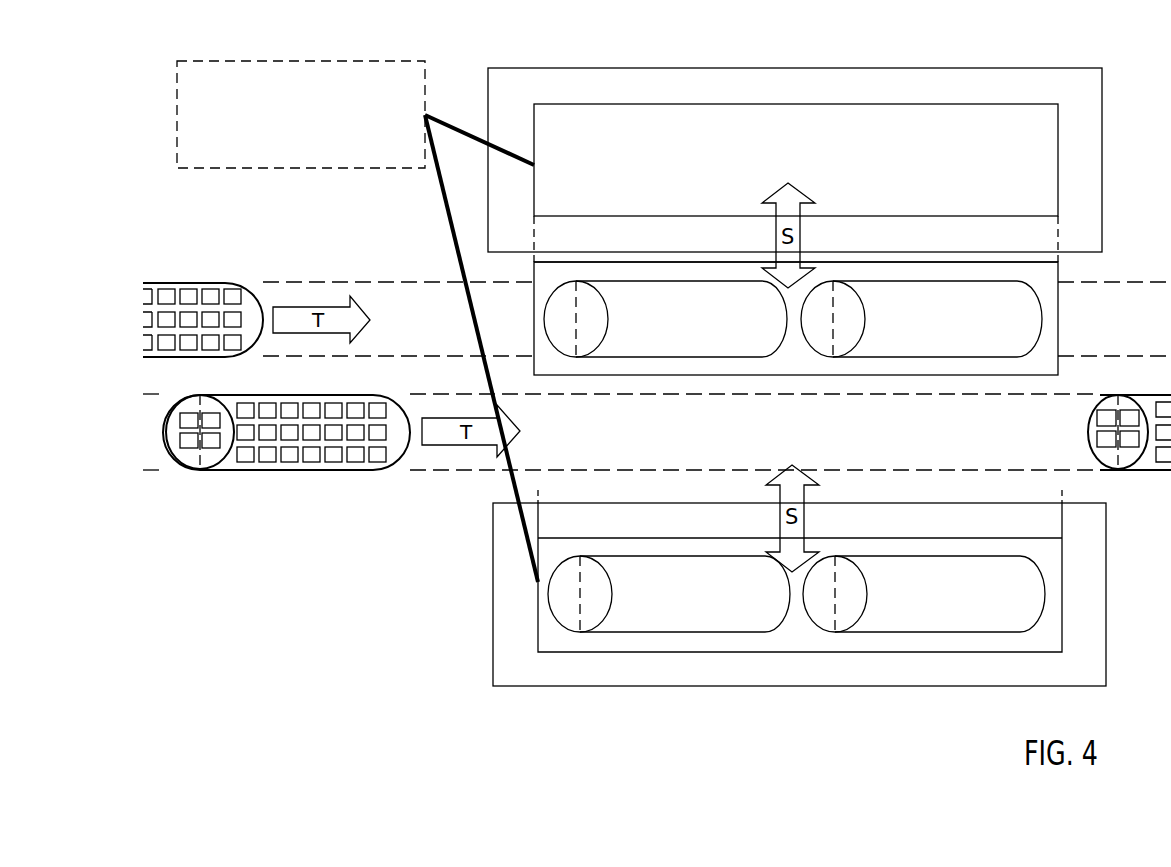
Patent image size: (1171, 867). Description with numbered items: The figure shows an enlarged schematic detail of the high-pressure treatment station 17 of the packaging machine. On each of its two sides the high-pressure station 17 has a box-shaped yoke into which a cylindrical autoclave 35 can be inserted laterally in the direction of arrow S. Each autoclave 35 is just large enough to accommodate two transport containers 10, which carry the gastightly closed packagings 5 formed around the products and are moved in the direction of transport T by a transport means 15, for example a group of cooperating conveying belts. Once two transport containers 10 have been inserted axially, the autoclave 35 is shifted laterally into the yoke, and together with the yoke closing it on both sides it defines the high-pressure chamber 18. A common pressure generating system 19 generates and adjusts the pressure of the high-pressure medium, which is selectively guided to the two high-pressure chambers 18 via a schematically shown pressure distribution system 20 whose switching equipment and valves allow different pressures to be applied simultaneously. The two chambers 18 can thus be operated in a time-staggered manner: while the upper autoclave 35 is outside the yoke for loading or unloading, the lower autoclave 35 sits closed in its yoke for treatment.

The packaging 5 is at (266, 440).
The transport container 10 is at (286, 455).
The transport means 15 is at (300, 292).
The high-pressure treatment station 17 is at (510, 52).
The high-pressure chamber 18 is at (618, 120).
The pressure generating system 19 is at (228, 75).
The pressure distribution system 20 is at (452, 233).
The autoclave 35 is at (783, 378).